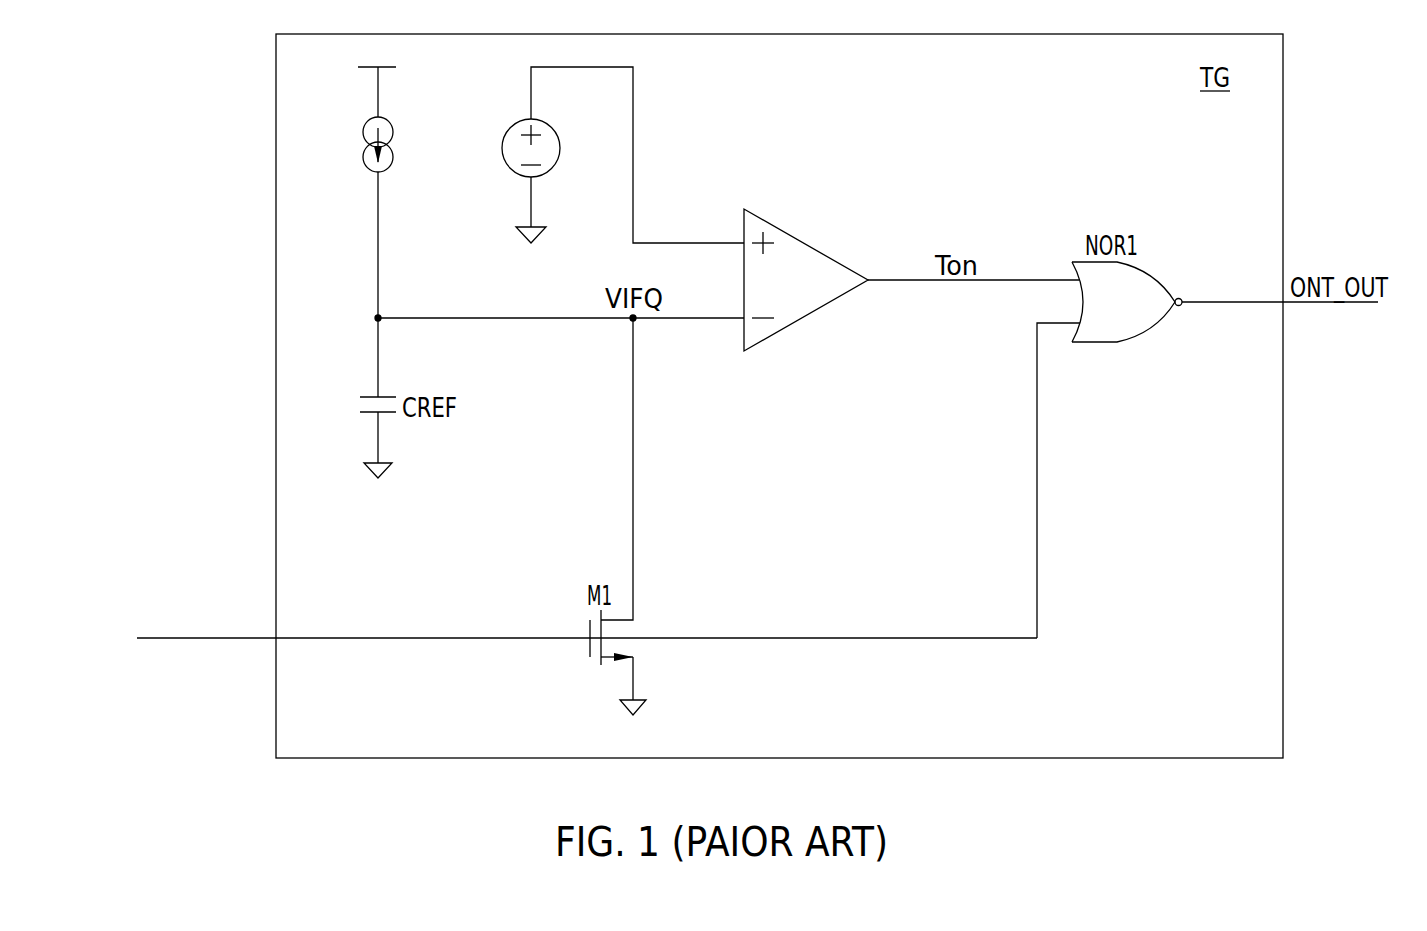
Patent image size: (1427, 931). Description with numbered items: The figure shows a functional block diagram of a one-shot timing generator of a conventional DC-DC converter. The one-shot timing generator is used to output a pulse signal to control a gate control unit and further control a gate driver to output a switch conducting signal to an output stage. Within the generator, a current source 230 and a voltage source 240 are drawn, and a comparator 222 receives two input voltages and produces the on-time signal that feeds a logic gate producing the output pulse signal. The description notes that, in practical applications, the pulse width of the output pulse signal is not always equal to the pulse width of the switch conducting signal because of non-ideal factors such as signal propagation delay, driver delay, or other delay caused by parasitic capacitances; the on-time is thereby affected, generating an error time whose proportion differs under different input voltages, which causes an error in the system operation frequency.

The current source 230 is at (367, 123).
The voltage source 240 is at (558, 160).
The comparator 222 is at (780, 292).